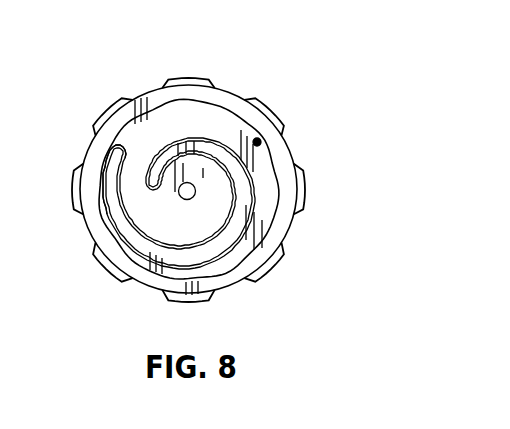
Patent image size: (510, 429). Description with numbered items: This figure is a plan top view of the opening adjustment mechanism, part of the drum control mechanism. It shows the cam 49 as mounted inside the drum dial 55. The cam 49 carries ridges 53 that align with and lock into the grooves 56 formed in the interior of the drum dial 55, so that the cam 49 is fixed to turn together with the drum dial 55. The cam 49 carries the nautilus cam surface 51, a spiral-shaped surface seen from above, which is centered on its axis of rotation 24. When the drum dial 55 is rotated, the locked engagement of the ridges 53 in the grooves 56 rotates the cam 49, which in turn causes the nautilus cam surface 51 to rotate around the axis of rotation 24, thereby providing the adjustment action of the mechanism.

The axis of rotation 24 is at (195, 194).
The cam 49 is at (139, 110).
The nautilus cam surface 51 is at (197, 137).
The ridges 53 is at (262, 140).
The drum dial 55 is at (308, 188).
The grooves 56 is at (114, 142).